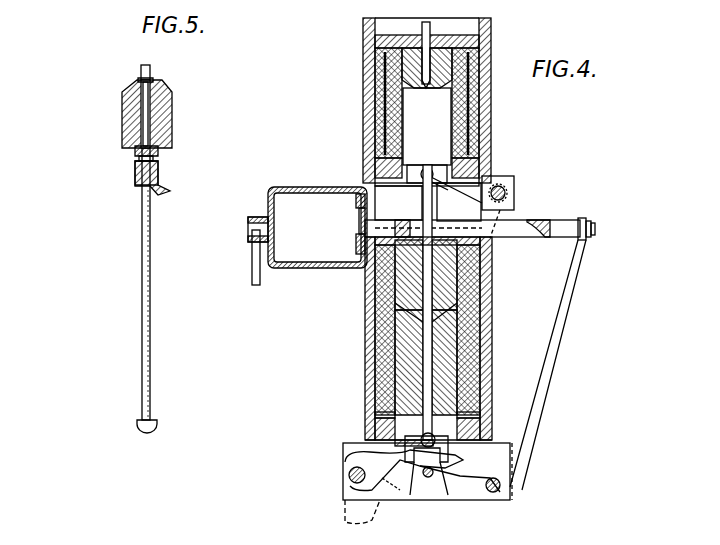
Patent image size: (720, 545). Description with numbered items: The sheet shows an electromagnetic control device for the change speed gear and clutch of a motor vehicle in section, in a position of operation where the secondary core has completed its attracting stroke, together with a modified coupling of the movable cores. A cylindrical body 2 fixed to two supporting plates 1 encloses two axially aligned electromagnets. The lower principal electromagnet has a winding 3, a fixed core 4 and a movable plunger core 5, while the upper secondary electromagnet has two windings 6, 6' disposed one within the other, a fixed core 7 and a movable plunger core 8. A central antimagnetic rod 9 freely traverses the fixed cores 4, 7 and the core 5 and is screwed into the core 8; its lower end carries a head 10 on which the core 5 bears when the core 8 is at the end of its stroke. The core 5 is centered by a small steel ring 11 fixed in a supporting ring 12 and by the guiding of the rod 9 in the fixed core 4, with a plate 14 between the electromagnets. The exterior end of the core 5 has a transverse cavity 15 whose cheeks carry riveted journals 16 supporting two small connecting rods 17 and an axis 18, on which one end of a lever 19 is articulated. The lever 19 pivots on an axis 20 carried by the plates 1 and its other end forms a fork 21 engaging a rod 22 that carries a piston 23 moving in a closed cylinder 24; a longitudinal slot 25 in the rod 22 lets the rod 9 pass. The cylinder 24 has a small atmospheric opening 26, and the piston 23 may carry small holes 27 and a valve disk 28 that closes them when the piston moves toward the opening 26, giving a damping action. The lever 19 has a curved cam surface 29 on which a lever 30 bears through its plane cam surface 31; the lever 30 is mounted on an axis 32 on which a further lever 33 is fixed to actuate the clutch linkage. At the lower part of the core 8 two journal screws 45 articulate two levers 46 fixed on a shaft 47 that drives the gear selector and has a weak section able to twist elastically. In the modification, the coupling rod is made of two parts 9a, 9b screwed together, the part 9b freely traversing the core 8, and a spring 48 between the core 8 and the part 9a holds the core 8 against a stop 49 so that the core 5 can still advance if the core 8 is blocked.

In FIG. 4, the supporting plates 1 is at (405, 496).
In FIG. 4, the housing 2 is at (491, 52).
In FIG. 4, the winding 3 is at (395, 315).
In FIG. 4, the fixed core 4 is at (385, 292).
In FIG. 4, the movable plunger core 5 is at (408, 359).
In FIG. 4, the winding 6 is at (406, 113).
In FIG. 4, the winding 6' is at (403, 103).
In FIG. 4, the fixed core 7 is at (438, 36).
In FIG. 5, the movable plunger core 8 is at (172, 122).
In FIG. 4, the movable plunger core 8 is at (427, 106).
In FIG. 4, the central rod 9 is at (428, 335).
In FIG. 5, the rod part 9a is at (146, 301).
In FIG. 5, the rod part 9b is at (145, 115).
In FIG. 4, the head 10 is at (465, 432).
In FIG. 4, the steel ring 11 is at (378, 430).
In FIG. 4, the supporting ring 12 is at (374, 426).
In FIG. 4, the intermediate plate 14 is at (481, 165).
In FIG. 4, the transverse cavity 15 is at (395, 443).
In FIG. 4, the journals 16 is at (481, 426).
In FIG. 4, the connecting rods 17 is at (420, 480).
In FIG. 4, the axis 18 is at (429, 479).
In FIG. 4, the lever 19 is at (547, 379).
In FIG. 4, the axis 20 is at (501, 485).
In FIG. 4, the fork 21 is at (590, 246).
In FIG. 4, the rod 22 is at (566, 222).
In FIG. 4, the piston 23 is at (398, 203).
In FIG. 4, the closed cylinder 24 is at (315, 268).
In FIG. 4, the longitudinal slot 25 is at (528, 224).
In FIG. 4, the opening 26 is at (250, 230).
In FIG. 4, the small holes 27 is at (356, 244).
In FIG. 4, the valve disk 28 is at (356, 200).
In FIG. 4, the curved cam surface 29 is at (438, 482).
In FIG. 4, the lever 30 is at (382, 456).
In FIG. 4, the plane cam surface 31 is at (465, 470).
In FIG. 4, the axis 32 is at (349, 475).
In FIG. 4, the lever 33 is at (344, 512).
In FIG. 4, the journal screws 45 is at (427, 168).
In FIG. 5, the levers 46 is at (168, 190).
In FIG. 4, the levers 46 is at (455, 199).
In FIG. 4, the shaft 47 is at (514, 190).
In FIG. 5, the spring 48 is at (158, 160).
In FIG. 5, the stop 49 is at (152, 80).